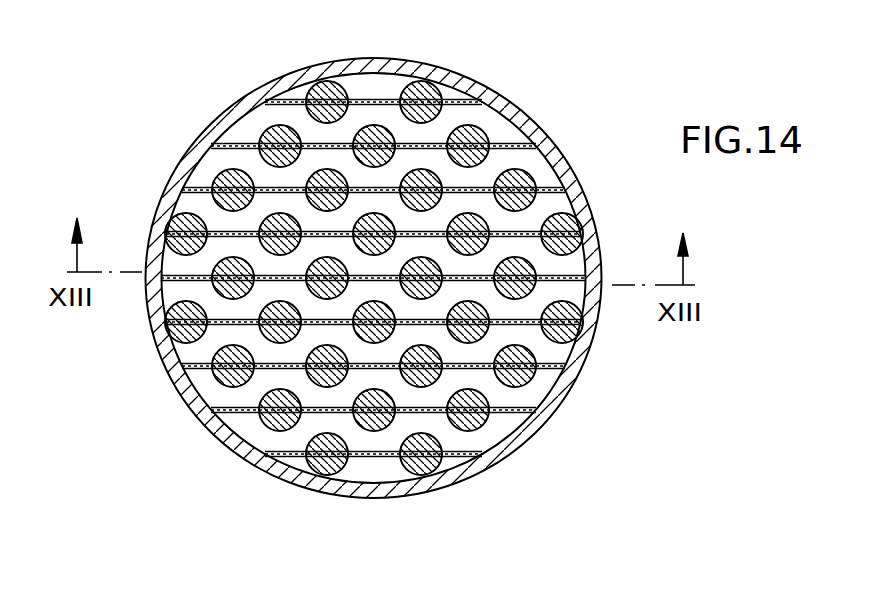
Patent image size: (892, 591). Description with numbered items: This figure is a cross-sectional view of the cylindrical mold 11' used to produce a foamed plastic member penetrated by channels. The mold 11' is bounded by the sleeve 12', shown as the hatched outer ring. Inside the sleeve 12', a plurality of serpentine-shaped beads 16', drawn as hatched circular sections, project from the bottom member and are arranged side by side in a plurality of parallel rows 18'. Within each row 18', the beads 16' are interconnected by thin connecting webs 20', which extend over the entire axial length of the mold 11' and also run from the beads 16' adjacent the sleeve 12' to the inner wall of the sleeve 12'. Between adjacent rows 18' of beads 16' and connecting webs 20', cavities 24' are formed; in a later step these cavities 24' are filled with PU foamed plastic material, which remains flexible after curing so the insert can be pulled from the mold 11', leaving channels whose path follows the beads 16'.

The cylindrical mold 11' is at (387, 280).
The sleeve 12' is at (407, 278).
The serpentine-shaped beads 16' is at (374, 280).
The parallel rows 18' is at (577, 122).
The thin connecting webs 20' is at (394, 282).
The cavities 24' is at (159, 140).